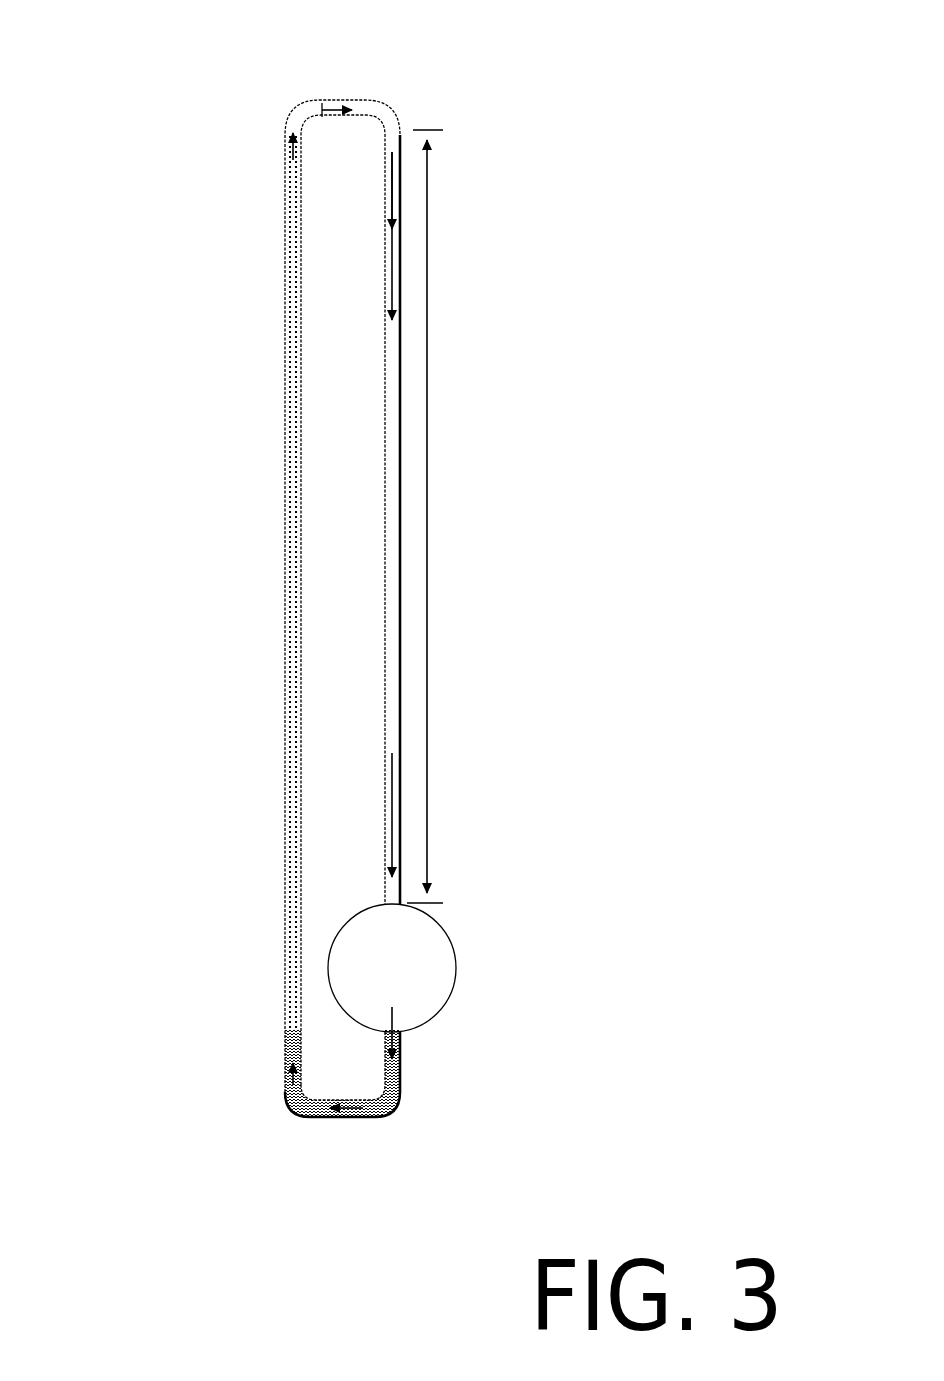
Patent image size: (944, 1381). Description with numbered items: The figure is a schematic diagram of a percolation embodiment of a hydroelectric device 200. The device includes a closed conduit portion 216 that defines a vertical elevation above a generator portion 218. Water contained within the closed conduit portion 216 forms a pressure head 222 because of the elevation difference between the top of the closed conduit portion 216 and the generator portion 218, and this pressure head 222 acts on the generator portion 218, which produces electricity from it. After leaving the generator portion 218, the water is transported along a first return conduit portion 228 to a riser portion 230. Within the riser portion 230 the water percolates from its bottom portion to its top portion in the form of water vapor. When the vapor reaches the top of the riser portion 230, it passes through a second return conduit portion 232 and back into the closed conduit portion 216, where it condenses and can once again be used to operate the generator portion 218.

The hydroelectric device 200 is at (592, 175).
The closed conduit portion 216 is at (397, 518).
The generator portion 218 is at (392, 968).
The pressure head 222 is at (427, 350).
The first return conduit portion 228 is at (337, 1113).
The riser portion 230 is at (286, 703).
The second return conduit portion 232 is at (340, 110).